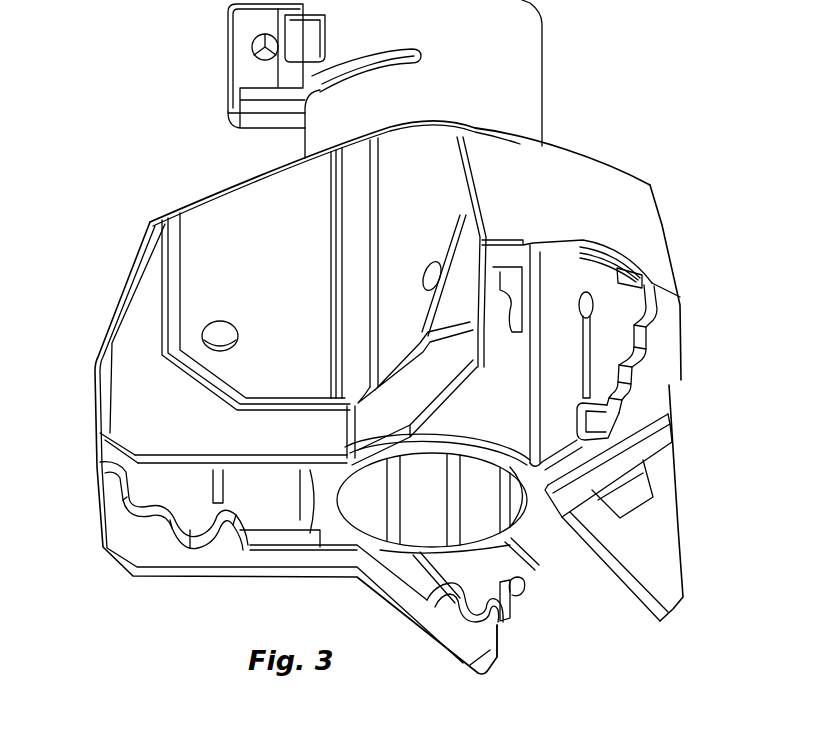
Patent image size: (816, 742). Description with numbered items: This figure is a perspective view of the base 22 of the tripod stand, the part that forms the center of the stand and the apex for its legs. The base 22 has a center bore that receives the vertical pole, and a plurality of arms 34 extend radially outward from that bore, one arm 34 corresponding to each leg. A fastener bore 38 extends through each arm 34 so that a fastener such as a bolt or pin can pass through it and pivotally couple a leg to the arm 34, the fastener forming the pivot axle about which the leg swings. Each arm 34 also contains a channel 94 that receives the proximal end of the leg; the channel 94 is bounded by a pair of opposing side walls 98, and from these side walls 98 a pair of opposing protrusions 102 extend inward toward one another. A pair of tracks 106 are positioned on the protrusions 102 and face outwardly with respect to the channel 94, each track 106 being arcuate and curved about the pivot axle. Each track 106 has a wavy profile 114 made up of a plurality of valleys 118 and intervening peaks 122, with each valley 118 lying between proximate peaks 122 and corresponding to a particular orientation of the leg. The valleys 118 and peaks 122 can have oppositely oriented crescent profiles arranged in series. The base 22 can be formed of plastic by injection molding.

The base 22 is at (545, 125).
The arm 34 is at (630, 190).
The fastener bore 38 is at (222, 322).
The channel 94 is at (593, 285).
The side wall 98 is at (680, 388).
The protrusion 102 is at (622, 333).
The track 106 is at (105, 477).
The wavy profile 114 is at (510, 615).
The valley 118 is at (522, 590).
The peak 122 is at (503, 627).